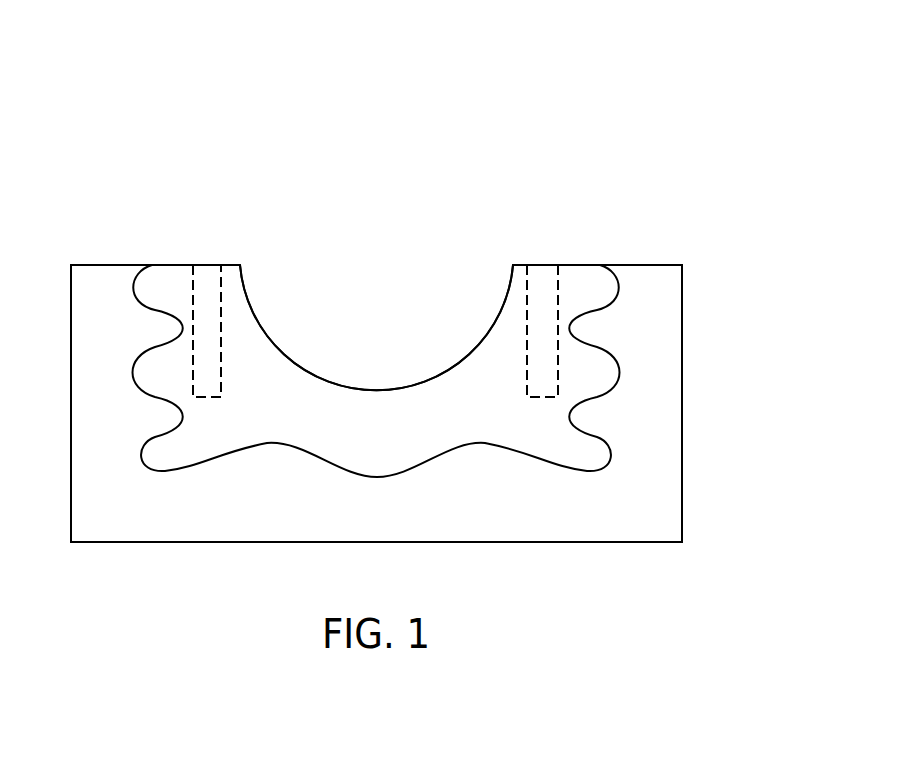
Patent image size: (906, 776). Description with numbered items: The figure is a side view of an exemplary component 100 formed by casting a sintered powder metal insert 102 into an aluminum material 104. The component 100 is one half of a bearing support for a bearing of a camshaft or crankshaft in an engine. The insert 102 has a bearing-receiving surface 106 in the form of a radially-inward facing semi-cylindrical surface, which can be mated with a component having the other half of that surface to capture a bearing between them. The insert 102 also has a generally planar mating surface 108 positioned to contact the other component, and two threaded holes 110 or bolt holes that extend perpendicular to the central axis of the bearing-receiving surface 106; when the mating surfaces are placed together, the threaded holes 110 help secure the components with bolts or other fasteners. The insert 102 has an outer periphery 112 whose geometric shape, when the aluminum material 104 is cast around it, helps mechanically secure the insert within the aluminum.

The component 100 is at (628, 139).
The insert 102 is at (310, 410).
The aluminum material 104 is at (658, 323).
The bearing-receiving surface 106 is at (463, 368).
The mating surface 108 is at (168, 265).
The threaded holes 110 is at (222, 283).
The outer periphery 112 is at (587, 397).